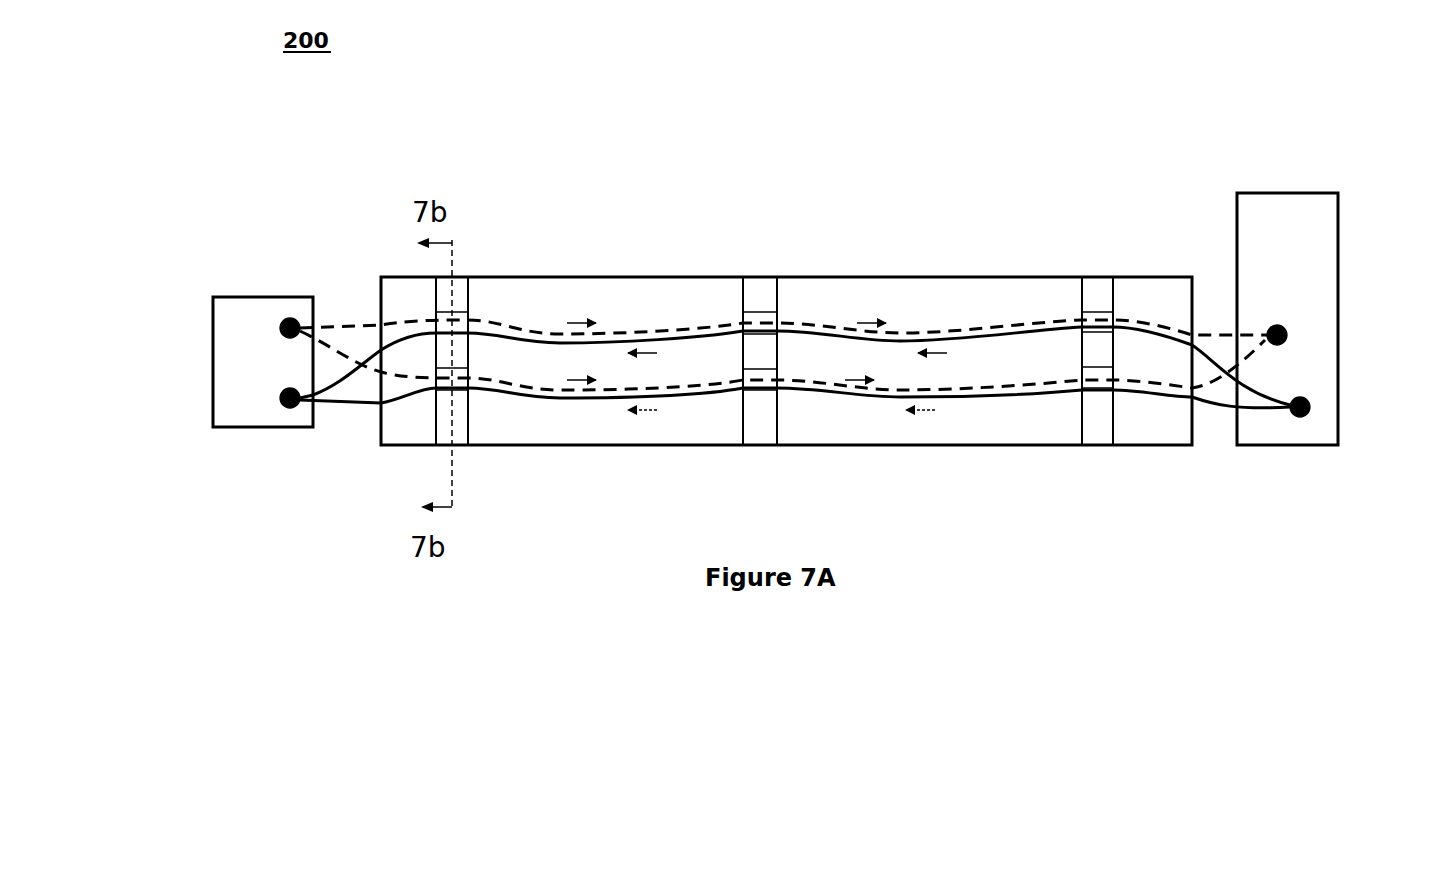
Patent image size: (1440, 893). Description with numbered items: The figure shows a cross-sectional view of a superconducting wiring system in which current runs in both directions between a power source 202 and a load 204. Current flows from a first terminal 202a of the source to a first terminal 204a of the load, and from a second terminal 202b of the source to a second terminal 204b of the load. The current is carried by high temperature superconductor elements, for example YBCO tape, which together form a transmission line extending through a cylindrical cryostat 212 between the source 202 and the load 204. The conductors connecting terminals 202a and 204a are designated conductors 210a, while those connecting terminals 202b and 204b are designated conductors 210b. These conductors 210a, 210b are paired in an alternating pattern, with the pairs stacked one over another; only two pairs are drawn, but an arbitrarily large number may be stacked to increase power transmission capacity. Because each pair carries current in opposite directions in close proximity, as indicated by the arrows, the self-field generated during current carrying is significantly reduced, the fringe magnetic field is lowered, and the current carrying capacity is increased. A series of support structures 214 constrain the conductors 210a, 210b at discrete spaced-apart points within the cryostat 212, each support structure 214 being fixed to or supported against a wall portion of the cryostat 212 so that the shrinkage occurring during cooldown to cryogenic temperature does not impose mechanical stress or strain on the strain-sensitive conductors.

The power source 202 is at (230, 347).
The first terminal of the source 202a is at (293, 318).
The second terminal of the source 202b is at (293, 410).
The load 204 is at (1257, 245).
The first terminal of the load 204a is at (1290, 325).
The second terminal of the load 204b is at (1312, 417).
The conductors 210a is at (965, 383).
The conductors 210b is at (1030, 330).
The cryostat 212 is at (823, 277).
The support structures 214 is at (460, 283).